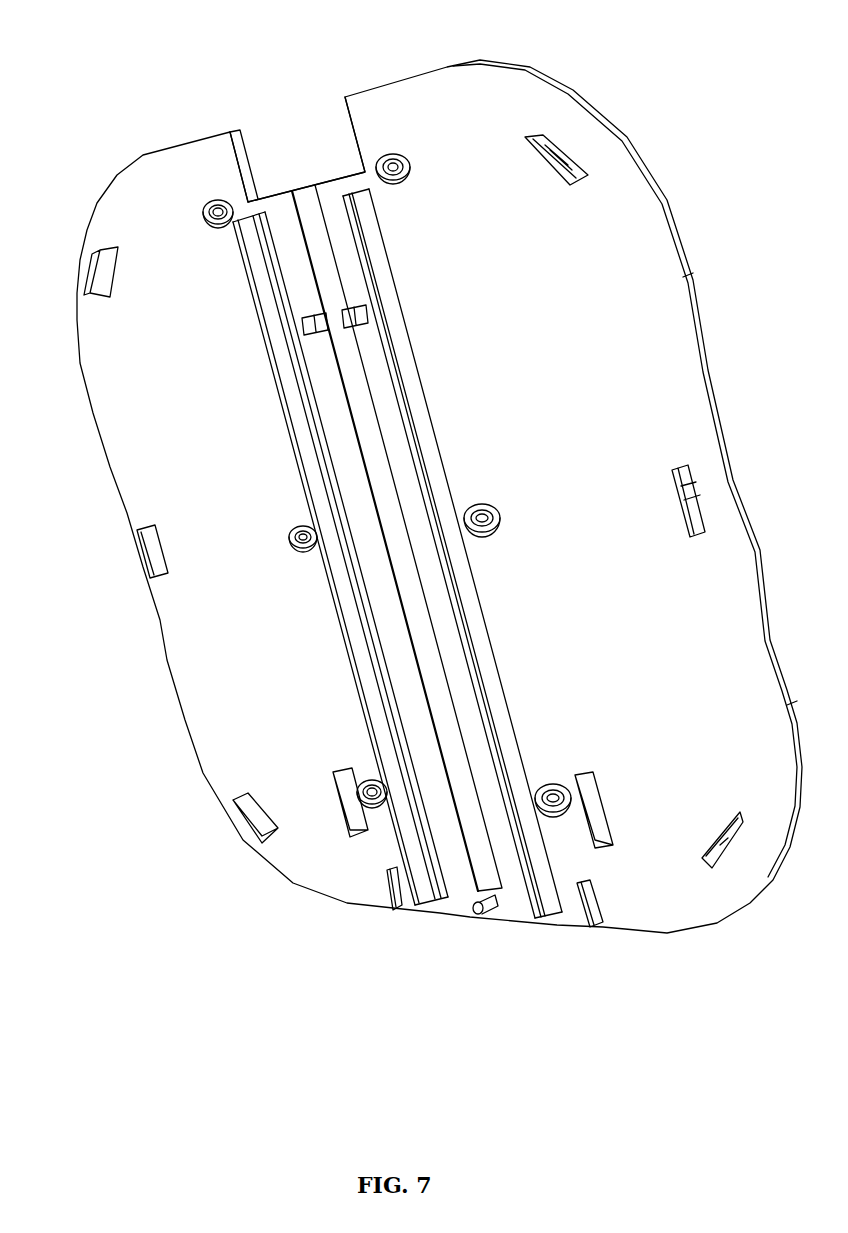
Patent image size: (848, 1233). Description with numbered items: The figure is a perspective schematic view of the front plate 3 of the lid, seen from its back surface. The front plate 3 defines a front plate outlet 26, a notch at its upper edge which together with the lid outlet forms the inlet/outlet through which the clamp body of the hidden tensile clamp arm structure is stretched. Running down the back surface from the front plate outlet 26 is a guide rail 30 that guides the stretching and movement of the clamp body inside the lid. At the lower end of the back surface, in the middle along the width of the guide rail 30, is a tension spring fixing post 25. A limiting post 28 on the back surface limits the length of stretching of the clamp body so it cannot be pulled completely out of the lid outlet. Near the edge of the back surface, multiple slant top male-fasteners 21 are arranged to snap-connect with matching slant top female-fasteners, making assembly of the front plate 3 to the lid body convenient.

The front plate 3 is at (137, 368).
The slant top male-fastener 21 is at (692, 502).
The tension spring fixing post 25 is at (478, 912).
The front plate outlet 26 is at (300, 147).
The limiting post 28 is at (308, 322).
The guide rail 30 is at (353, 550).